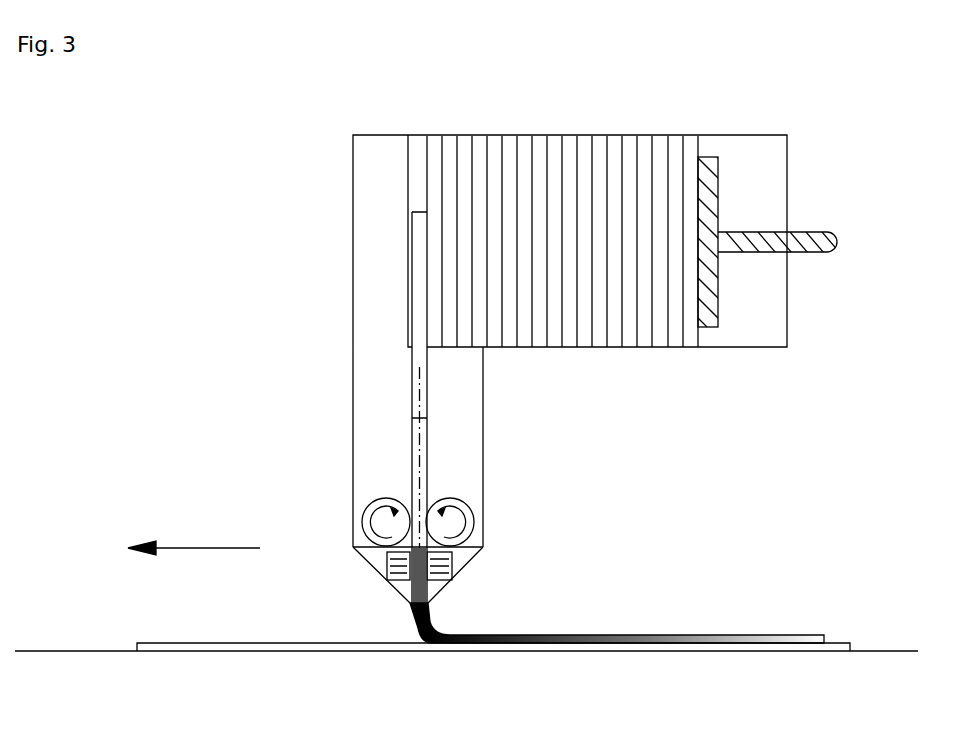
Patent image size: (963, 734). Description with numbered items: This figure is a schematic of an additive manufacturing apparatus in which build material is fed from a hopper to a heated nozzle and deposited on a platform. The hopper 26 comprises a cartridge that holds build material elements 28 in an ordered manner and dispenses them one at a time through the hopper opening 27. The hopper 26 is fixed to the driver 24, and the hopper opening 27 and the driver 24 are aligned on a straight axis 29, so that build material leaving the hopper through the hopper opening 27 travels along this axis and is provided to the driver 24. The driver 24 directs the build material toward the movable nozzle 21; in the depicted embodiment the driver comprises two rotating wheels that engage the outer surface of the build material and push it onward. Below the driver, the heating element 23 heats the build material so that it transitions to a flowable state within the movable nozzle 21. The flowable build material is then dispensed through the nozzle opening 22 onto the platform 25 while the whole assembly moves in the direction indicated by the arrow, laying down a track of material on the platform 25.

The movable nozzle 21 is at (408, 603).
The nozzle opening 22 is at (430, 612).
The heating element 23 is at (455, 562).
The driver 24 is at (465, 505).
The platform 25 is at (466, 669).
The hopper 26 is at (748, 133).
The hopper opening 27 is at (430, 347).
The build material elements 28 is at (642, 325).
The straight axis 29 is at (419, 480).